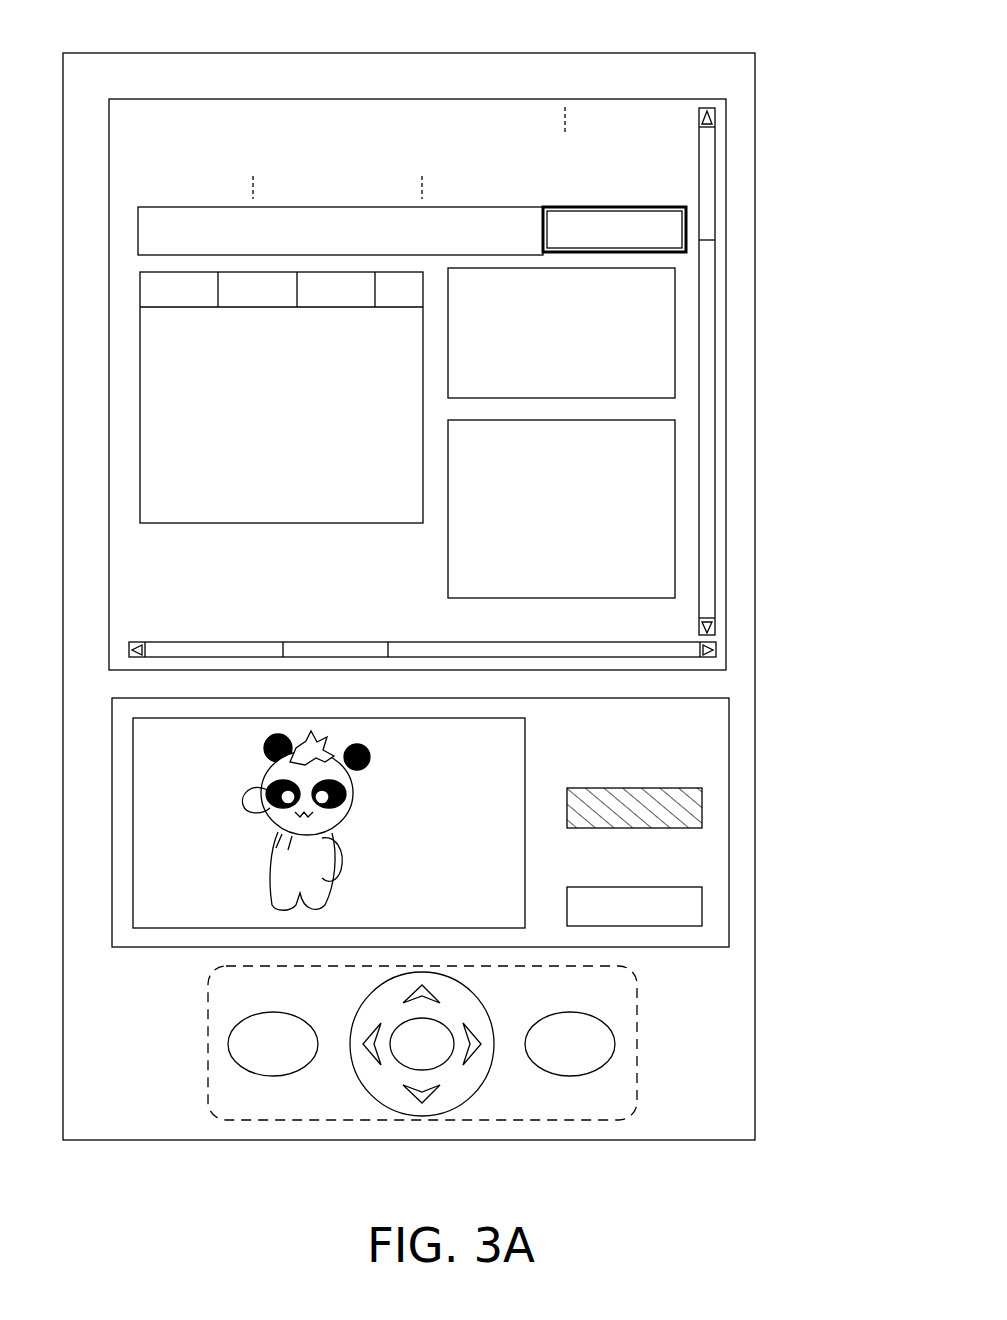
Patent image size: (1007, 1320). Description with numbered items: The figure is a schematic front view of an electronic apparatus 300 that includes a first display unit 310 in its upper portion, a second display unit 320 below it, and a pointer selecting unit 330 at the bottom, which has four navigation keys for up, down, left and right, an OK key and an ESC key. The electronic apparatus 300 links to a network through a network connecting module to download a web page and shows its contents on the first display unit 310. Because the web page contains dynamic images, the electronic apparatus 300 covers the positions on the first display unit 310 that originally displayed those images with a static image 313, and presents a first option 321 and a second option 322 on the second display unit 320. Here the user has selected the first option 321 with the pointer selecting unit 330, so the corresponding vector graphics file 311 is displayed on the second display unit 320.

The electronic apparatus 300 is at (702, 53).
The first display unit 310 is at (726, 121).
The static image 313 is at (675, 383).
The second display unit 320 is at (729, 748).
The vector graphics file 311 is at (525, 873).
The first option 321 is at (702, 806).
The second option 322 is at (702, 905).
The pointer selecting unit 330 is at (637, 1040).